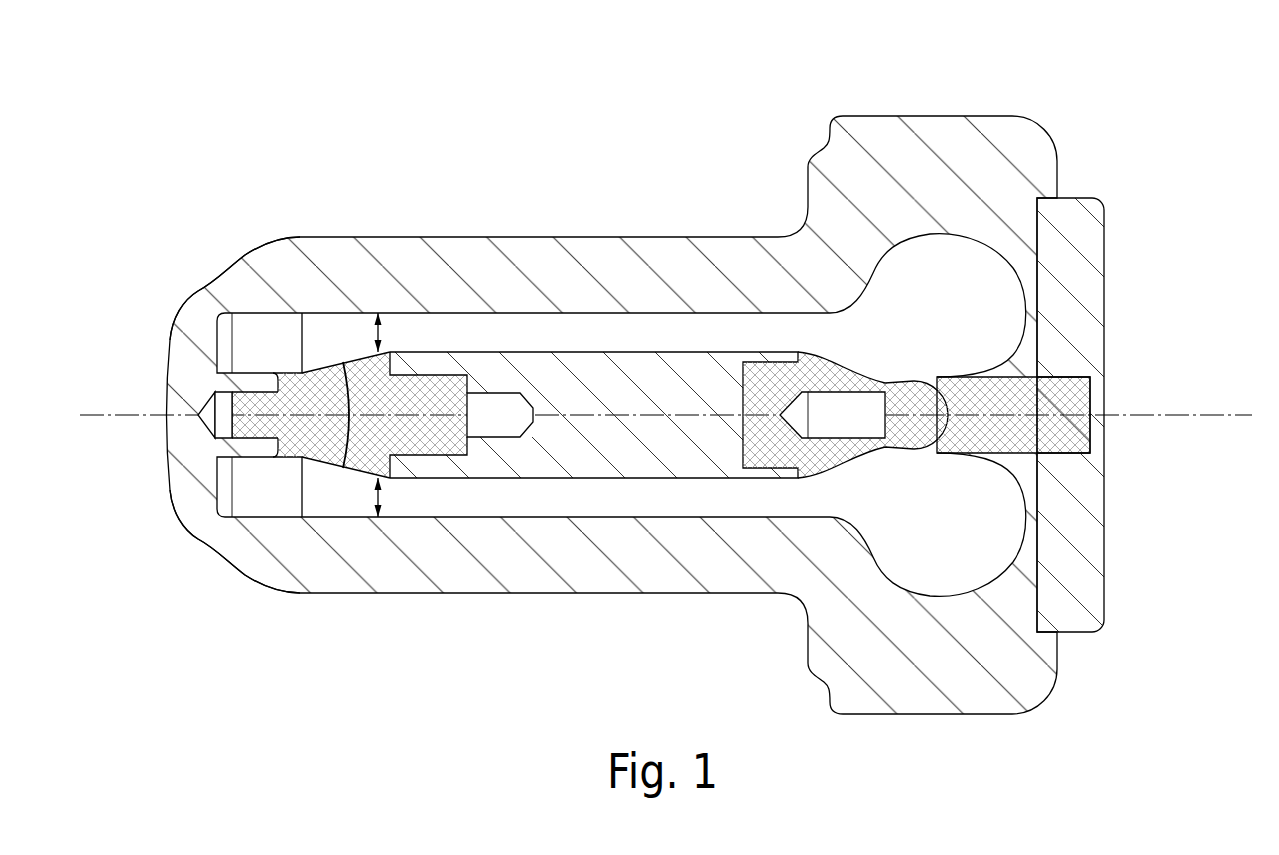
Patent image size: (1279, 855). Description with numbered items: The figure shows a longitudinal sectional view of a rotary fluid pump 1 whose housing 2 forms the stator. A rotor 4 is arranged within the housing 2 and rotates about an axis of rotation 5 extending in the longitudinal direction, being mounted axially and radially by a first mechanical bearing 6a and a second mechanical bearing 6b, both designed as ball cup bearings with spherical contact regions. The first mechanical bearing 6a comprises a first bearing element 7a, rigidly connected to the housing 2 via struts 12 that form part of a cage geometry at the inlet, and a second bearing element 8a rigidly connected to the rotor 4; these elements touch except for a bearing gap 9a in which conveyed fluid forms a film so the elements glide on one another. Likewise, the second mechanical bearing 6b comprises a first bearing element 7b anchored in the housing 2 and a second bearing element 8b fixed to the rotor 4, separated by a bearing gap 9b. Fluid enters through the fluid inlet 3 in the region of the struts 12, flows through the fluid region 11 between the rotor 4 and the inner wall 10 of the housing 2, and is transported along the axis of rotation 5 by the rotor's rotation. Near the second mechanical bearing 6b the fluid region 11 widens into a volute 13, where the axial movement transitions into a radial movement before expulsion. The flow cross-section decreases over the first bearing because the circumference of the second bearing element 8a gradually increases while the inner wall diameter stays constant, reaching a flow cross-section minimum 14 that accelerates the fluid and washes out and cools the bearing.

The fluid pump 1 is at (617, 107).
The housing 2 is at (342, 253).
The fluid inlet 3 is at (225, 341).
The rotor 4 is at (630, 375).
The axis of rotation 5 is at (98, 412).
The first mechanical bearing 6a is at (347, 392).
The second mechanical bearing 6b is at (935, 377).
The first bearing element 7a is at (290, 372).
The first bearing element 7b is at (1093, 430).
The second bearing element 8a is at (392, 368).
The second bearing element 8b is at (825, 403).
The bearing gap 9a is at (366, 472).
The bearing gap 9b is at (957, 423).
The inner wall 10 is at (545, 512).
The fluid region 11 is at (628, 503).
The struts 12 is at (207, 477).
The volute 13 is at (961, 265).
The flow cross-section minimum 14 is at (372, 316).